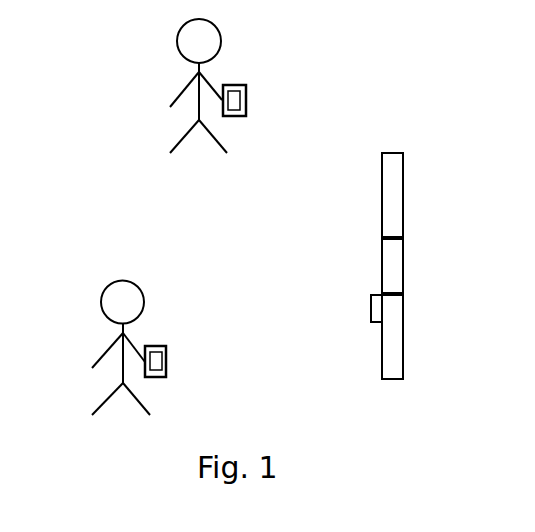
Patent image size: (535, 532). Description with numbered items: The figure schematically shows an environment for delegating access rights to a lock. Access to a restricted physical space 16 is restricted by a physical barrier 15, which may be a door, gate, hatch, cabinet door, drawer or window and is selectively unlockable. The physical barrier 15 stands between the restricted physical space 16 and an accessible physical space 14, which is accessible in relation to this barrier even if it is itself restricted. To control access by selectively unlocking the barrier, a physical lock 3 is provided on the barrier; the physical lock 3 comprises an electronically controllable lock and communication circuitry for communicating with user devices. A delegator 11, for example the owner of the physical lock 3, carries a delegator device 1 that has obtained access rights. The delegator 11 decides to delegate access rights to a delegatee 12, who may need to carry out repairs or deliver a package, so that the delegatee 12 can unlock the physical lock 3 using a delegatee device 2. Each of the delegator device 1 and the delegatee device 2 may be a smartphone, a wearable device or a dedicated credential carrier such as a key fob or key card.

The delegator device 1 is at (166, 357).
The delegatee device 2 is at (246, 97).
The physical lock 3 is at (371, 312).
The delegator 11 is at (100, 302).
The delegatee 12 is at (177, 40).
The accessible physical space 14 is at (352, 225).
The physical barrier 15 is at (403, 283).
The physical space 16 is at (453, 225).